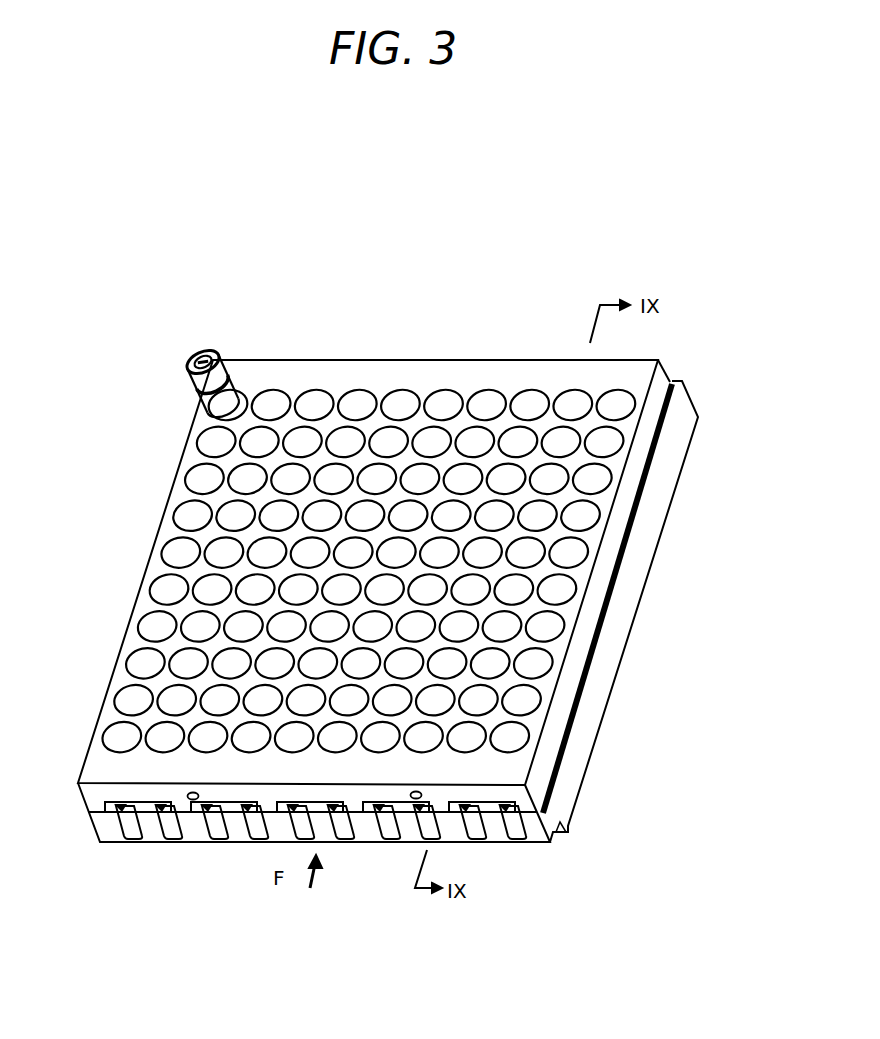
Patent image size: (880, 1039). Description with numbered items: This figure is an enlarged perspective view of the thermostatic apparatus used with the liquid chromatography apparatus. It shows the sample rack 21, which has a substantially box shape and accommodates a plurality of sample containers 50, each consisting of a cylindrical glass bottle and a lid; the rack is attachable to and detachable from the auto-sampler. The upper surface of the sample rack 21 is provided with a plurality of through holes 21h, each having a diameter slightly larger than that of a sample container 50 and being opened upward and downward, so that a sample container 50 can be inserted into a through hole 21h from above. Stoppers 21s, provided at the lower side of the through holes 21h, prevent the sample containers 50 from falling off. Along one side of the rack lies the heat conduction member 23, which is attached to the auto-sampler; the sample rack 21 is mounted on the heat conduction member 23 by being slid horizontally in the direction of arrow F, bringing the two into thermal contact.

The sample rack 21 is at (664, 380).
The through holes 21h is at (485, 408).
The stoppers 21s is at (484, 822).
The heat conduction member 23 is at (665, 488).
The sample container 50 is at (233, 398).